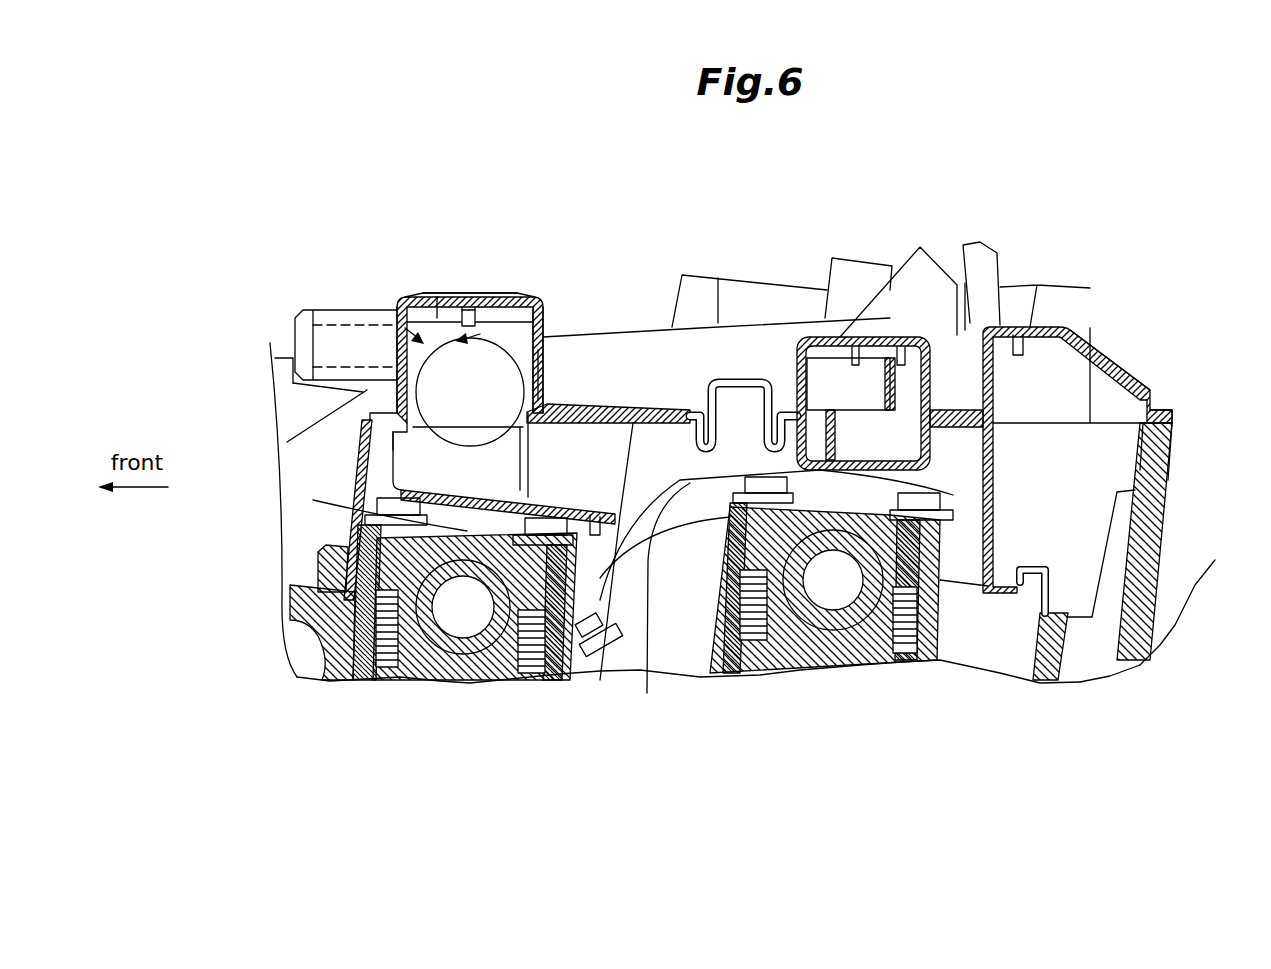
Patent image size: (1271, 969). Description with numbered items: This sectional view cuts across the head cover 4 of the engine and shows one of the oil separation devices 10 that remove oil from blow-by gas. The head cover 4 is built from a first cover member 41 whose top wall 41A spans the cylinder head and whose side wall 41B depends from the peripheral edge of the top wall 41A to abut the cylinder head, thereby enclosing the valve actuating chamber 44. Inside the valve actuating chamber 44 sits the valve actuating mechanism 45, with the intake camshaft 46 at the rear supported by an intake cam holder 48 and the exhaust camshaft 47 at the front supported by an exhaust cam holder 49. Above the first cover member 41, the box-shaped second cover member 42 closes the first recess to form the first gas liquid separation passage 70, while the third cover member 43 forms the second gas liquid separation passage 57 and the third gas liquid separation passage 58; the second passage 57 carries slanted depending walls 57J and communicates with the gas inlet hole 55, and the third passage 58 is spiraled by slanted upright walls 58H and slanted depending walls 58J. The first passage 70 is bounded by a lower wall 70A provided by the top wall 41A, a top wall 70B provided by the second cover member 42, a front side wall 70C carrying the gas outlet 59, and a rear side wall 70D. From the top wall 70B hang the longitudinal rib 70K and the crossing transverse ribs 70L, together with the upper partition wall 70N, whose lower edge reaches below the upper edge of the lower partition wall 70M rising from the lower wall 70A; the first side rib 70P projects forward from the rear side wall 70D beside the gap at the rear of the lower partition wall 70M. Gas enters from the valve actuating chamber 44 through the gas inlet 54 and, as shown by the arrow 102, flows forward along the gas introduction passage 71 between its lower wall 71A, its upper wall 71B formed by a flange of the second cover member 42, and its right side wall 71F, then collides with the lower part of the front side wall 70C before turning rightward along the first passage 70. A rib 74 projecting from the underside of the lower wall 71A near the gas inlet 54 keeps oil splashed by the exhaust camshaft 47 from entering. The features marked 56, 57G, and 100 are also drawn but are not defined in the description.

The head cover 4 is at (1183, 457).
The oil separation device 10 is at (450, 290).
The first cover member 41 is at (1160, 520).
The top wall 41A is at (731, 380).
The side wall 41B is at (350, 496).
The second cover member 42 is at (538, 290).
The third cover member 43 is at (1112, 363).
The valve actuating chamber 44 is at (660, 608).
The valve actuating mechanism 45 is at (947, 643).
The intake camshaft 46 is at (784, 658).
The exhaust camshaft 47 is at (422, 672).
The intake cam holder 48 is at (850, 658).
The exhaust cam holder 49 is at (478, 676).
The gas inlet 54 is at (649, 640).
The gas inlet hole 55 is at (1130, 648).
The front wall 56 is at (403, 330).
The second gas liquid separation passage 57 is at (1041, 478).
The corner portion 57G is at (1112, 430).
The slanted depending walls 57J is at (1040, 373).
The third gas liquid separation passage 58 is at (897, 453).
The slanted upright walls 58H is at (925, 398).
The slanted depending walls 58J is at (823, 378).
The gas outlet 59 is at (293, 337).
The first gas liquid separation passage 70 is at (490, 405).
The lower wall 70A is at (320, 553).
The top wall 70B is at (503, 297).
The front side wall 70C is at (395, 442).
The rear side wall 70D is at (548, 365).
The longitudinal rib 70K is at (466, 313).
The transverse ribs 70L is at (436, 318).
The lower partition wall 70M is at (405, 462).
The upper partition wall 70N is at (400, 388).
The first side rib 70P is at (538, 435).
The gas introduction passage 71 is at (498, 470).
The lower wall 71A is at (593, 670).
The upper wall 71B is at (617, 407).
The right side wall 71F is at (636, 470).
The rib 74 is at (613, 653).
The inner wall 100 is at (540, 365).
The arrow 102 is at (323, 590).